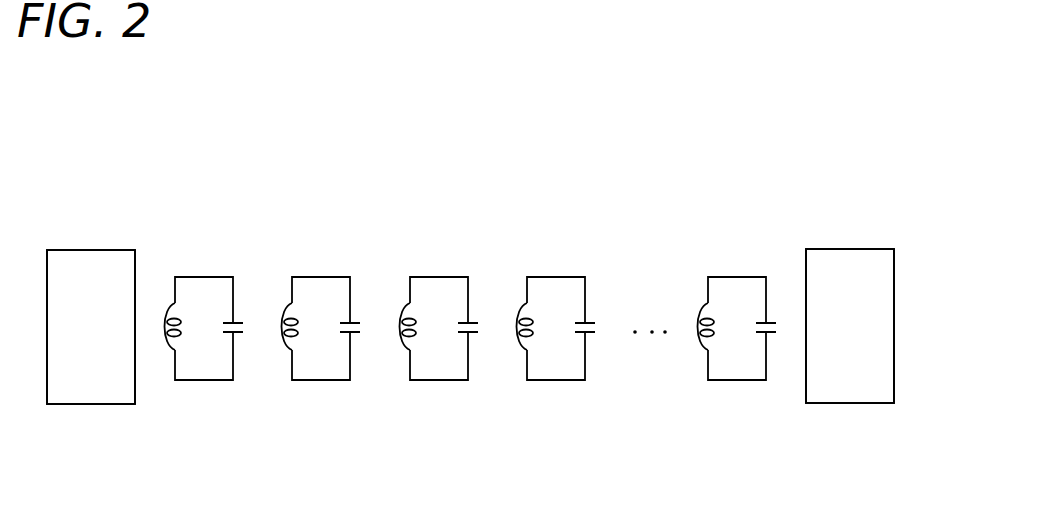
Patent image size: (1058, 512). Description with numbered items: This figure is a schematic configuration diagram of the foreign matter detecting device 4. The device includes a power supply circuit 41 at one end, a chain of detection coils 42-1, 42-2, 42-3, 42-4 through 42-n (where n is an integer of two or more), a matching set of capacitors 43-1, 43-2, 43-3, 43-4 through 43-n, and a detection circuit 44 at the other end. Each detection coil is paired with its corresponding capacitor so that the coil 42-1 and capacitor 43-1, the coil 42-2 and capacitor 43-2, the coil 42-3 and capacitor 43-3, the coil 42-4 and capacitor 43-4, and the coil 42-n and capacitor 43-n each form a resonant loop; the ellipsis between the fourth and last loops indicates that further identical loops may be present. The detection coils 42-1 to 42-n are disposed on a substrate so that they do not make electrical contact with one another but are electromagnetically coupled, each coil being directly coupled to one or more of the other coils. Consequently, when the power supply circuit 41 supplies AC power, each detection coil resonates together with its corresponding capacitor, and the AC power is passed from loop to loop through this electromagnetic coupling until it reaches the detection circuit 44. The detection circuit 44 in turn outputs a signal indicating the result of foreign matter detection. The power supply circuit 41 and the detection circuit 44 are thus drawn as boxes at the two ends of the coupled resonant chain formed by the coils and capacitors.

The foreign matter detecting device 4 is at (861, 141).
The power supply circuit 41 is at (90, 404).
The detection coil 42-1 is at (172, 353).
The detection coil 42-2 is at (289, 353).
The detection coil 42-3 is at (407, 353).
The detection coil 42-4 is at (524, 353).
The detection coil 42-n is at (705, 353).
The capacitor 43-1 is at (245, 327).
The capacitor 43-2 is at (362, 327).
The capacitor 43-3 is at (480, 327).
The capacitor 43-4 is at (597, 327).
The capacitor 43-n is at (778, 327).
The detection circuit 44 is at (852, 403).